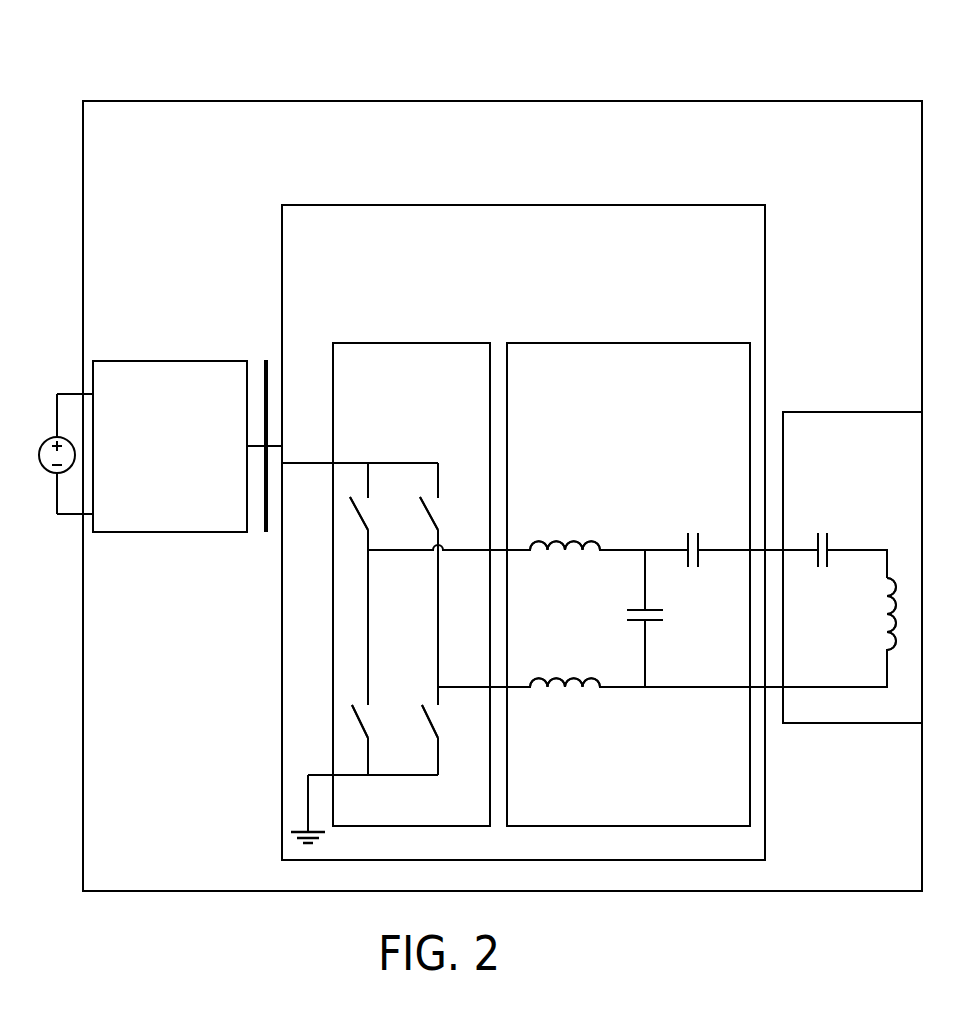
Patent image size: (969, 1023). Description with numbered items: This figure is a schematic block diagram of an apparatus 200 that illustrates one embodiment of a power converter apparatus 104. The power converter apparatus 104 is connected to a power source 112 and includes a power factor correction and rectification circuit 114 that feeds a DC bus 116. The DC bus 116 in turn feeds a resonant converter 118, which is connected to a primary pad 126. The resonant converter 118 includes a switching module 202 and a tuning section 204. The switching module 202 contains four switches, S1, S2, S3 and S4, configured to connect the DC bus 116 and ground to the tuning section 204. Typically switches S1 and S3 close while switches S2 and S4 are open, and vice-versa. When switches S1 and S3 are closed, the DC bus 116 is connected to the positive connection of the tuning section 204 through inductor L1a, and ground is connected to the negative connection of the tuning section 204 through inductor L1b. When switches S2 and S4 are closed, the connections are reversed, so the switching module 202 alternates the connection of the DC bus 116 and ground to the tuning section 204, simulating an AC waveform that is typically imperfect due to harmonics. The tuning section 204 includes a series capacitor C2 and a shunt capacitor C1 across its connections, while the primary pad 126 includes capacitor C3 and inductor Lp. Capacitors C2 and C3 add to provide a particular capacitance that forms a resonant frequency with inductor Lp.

The apparatus 200 is at (138, 47).
The power converter apparatus 104 is at (521, 163).
The resonant converter 118 is at (543, 266).
The switching module 202 is at (430, 432).
The tuning section 204 is at (646, 404).
The primary pad 126 is at (871, 501).
The power factor correction and rectification circuit 114 is at (188, 499).
The DC bus 116 is at (266, 533).
The power source 112 is at (49, 454).
The switch S1 is at (377, 513).
The switch S2 is at (378, 721).
The switch S3 is at (448, 721).
The switch S4 is at (447, 513).
The inductor L1a is at (565, 561).
The inductor L1b is at (565, 698).
The capacitor C1 is at (661, 614).
The series capacitor C2 is at (688, 564).
The capacitor C3 is at (818, 564).
The inductor Lp is at (876, 614).